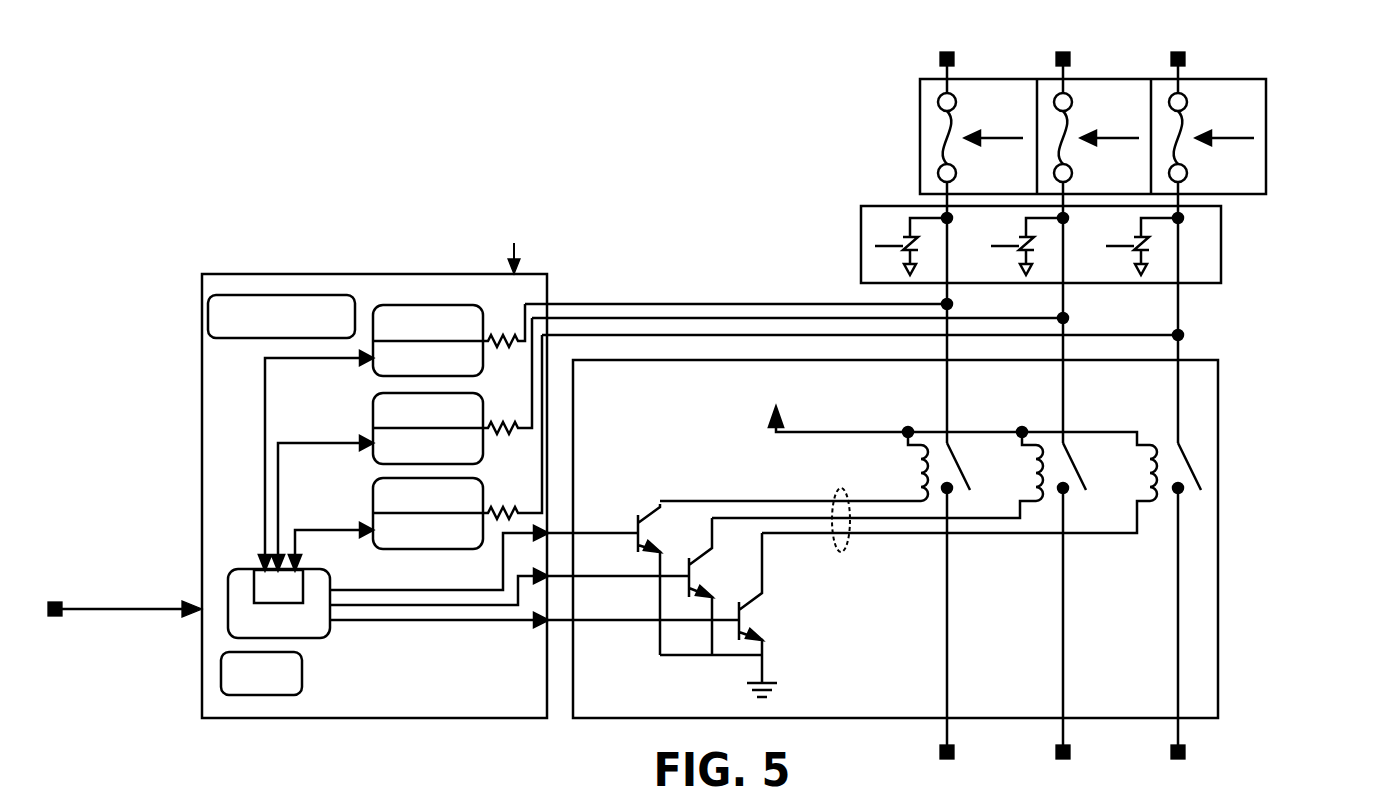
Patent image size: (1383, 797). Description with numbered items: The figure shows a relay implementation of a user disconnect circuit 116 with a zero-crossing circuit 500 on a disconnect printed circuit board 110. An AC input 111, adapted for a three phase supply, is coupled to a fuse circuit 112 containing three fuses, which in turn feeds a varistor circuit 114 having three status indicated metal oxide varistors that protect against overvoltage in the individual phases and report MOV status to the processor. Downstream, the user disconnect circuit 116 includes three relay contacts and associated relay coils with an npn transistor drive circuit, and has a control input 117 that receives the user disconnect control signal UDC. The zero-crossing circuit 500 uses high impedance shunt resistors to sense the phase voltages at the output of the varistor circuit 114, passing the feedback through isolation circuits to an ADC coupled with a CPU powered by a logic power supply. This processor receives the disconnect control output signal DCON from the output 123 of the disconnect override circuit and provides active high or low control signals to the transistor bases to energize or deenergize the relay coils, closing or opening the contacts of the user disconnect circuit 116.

The disconnect printed circuit board 110 is at (535, 115).
The AC input 111 is at (928, 41).
The fuse circuit 112 is at (920, 127).
The varistor circuit 114 is at (861, 225).
The user disconnect circuit 116 is at (1218, 416).
The control input 117 is at (842, 552).
The output 123 is at (148, 609).
The zero-crossing circuit 500 is at (202, 294).